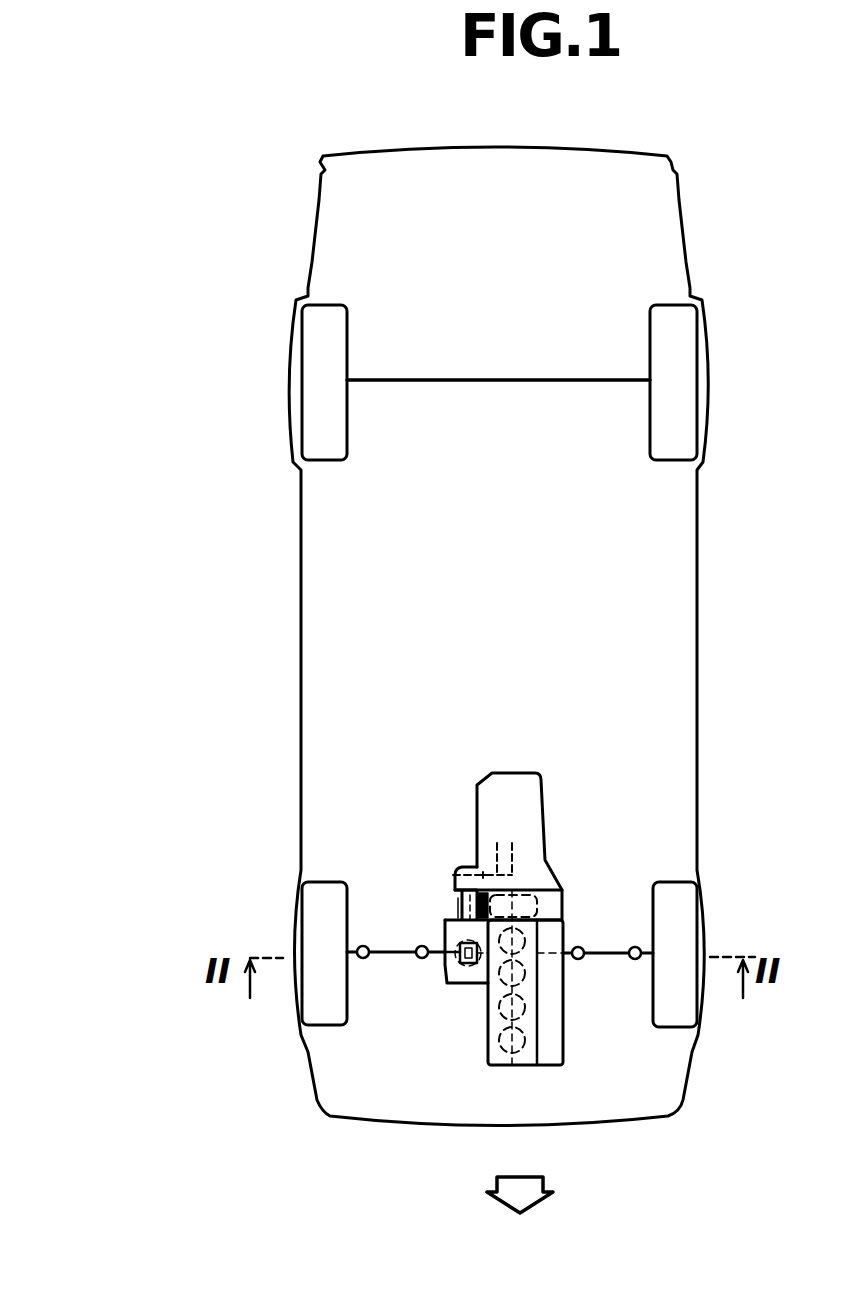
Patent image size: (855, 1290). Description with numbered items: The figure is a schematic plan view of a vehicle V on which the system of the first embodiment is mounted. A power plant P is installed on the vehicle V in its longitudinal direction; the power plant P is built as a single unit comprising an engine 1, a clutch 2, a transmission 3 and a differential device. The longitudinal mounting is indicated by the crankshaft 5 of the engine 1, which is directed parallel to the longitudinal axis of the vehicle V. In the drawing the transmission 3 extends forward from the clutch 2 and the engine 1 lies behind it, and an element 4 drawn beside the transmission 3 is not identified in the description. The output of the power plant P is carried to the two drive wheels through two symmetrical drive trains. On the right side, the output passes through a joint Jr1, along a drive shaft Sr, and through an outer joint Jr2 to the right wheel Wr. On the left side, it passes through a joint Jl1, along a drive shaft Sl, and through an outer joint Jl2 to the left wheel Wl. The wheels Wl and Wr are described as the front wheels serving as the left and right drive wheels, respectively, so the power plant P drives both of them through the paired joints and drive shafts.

The engine 1 is at (488, 1043).
The clutch 2 is at (562, 900).
The transmission 3 is at (540, 790).
The shift linkage 4 is at (450, 880).
The crankshaft 5 is at (458, 908).
The vehicle V is at (698, 587).
The power plant P is at (572, 853).
The right front wheel Wr is at (300, 917).
The left front wheel Wl is at (705, 918).
The right drive shaft Sr is at (388, 950).
The left drive shaft Sl is at (613, 956).
The right inner joint Jr1 is at (423, 958).
The right outer joint Jr2 is at (366, 958).
The left inner joint Jl1 is at (580, 959).
The left outer joint Jl2 is at (633, 947).